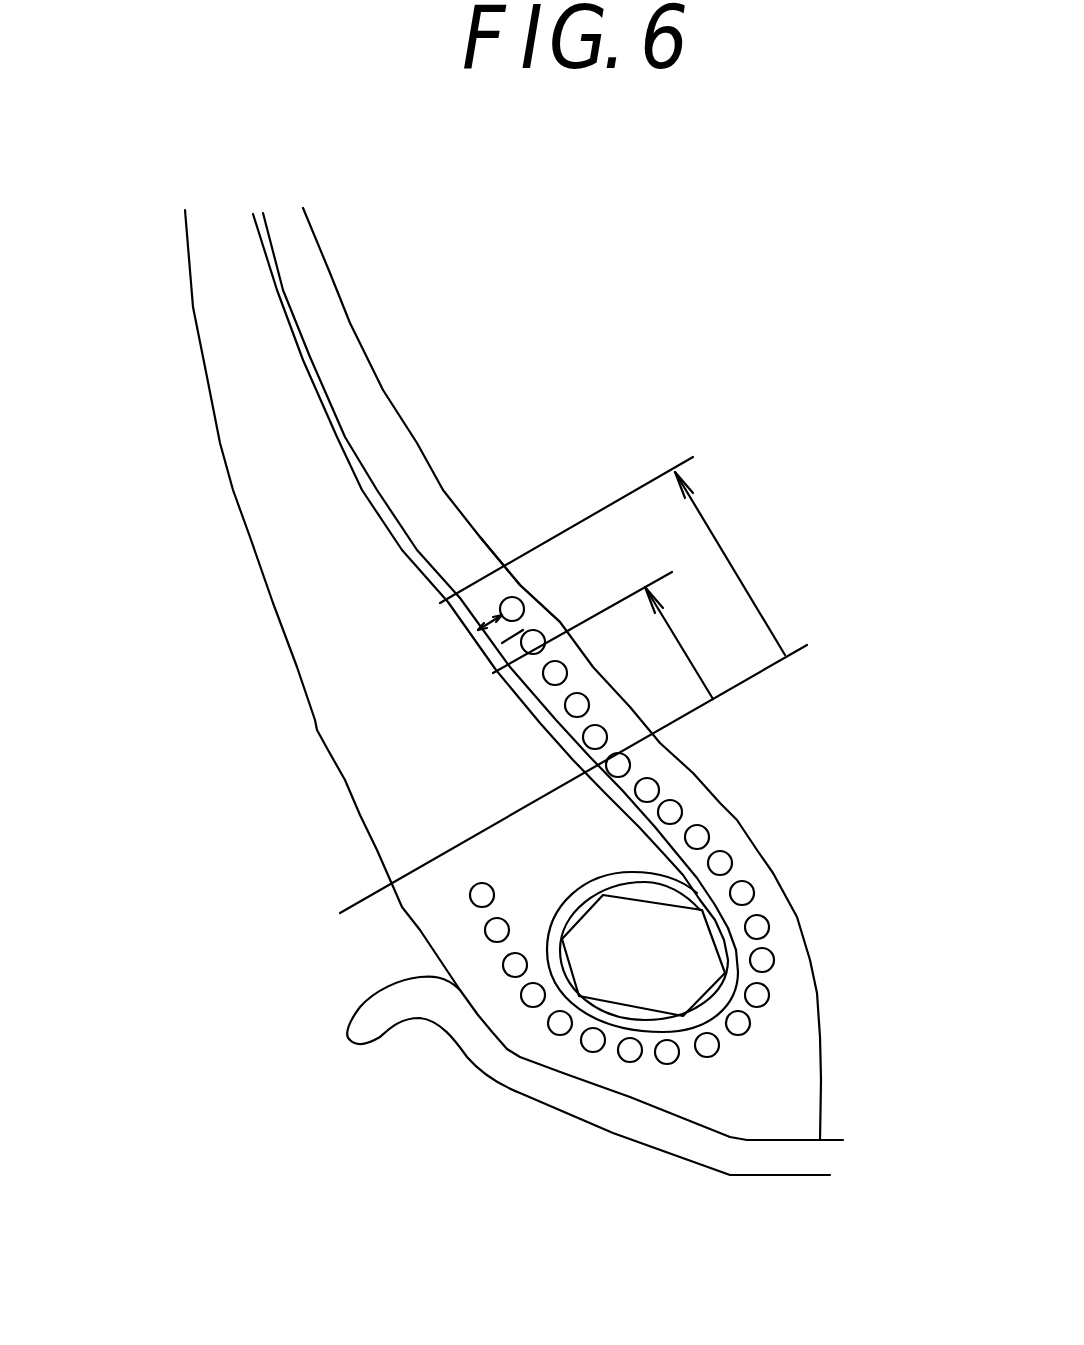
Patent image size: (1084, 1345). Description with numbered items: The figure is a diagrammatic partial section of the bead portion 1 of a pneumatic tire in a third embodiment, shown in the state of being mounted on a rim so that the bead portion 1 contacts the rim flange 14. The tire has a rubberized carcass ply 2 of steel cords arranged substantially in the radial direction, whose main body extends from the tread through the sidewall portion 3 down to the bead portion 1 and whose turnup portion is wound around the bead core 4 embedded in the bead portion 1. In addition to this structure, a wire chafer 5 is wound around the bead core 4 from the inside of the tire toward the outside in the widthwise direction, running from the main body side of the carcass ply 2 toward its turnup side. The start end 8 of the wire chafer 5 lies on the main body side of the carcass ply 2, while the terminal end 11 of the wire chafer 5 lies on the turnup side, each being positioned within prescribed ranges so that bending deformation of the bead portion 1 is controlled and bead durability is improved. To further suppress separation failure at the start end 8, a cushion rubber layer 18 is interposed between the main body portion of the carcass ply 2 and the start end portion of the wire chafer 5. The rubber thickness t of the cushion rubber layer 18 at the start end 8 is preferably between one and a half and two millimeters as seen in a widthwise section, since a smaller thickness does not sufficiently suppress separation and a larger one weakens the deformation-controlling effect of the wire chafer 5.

The bead portion 1 is at (820, 992).
The carcass ply 2 is at (308, 358).
The sidewall portion 3 is at (193, 313).
The bead core 4 is at (650, 967).
The wire chafer 5 is at (676, 808).
The start end 8 is at (506, 596).
The terminal end 11 is at (470, 893).
The rim flange 14 is at (420, 1000).
The cushion rubber layer 18 is at (542, 610).
The rubber thickness t is at (483, 620).